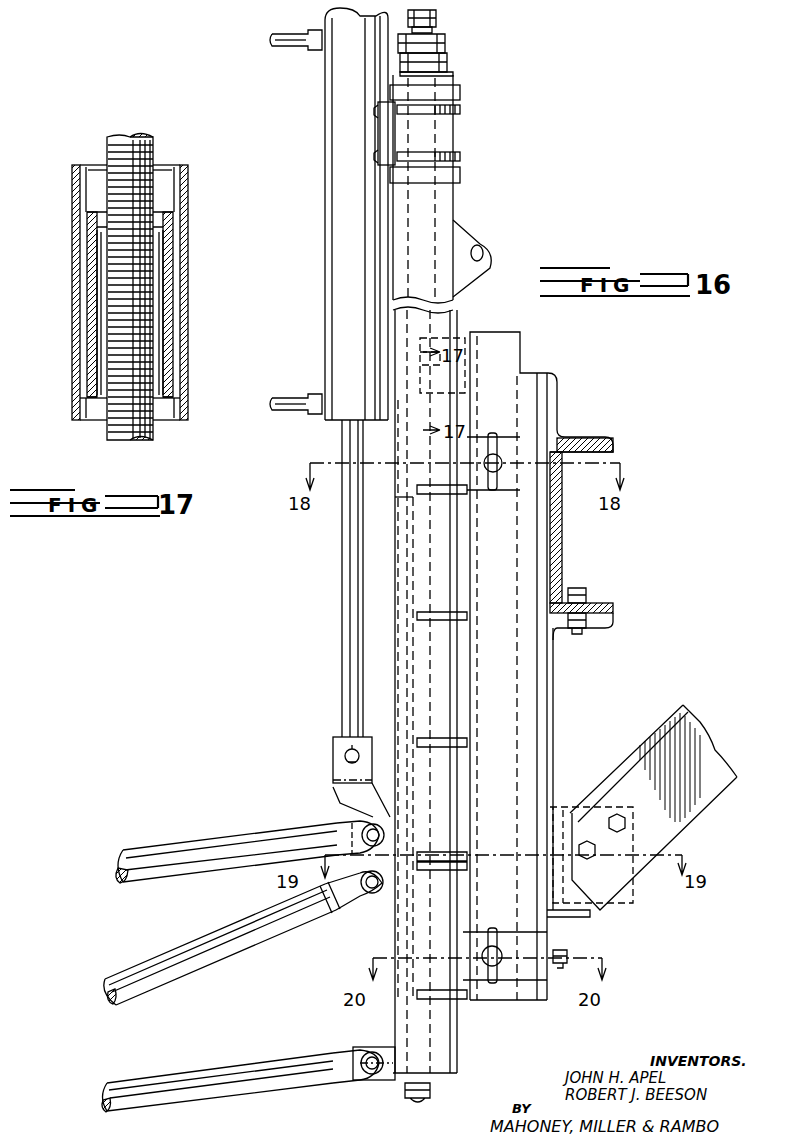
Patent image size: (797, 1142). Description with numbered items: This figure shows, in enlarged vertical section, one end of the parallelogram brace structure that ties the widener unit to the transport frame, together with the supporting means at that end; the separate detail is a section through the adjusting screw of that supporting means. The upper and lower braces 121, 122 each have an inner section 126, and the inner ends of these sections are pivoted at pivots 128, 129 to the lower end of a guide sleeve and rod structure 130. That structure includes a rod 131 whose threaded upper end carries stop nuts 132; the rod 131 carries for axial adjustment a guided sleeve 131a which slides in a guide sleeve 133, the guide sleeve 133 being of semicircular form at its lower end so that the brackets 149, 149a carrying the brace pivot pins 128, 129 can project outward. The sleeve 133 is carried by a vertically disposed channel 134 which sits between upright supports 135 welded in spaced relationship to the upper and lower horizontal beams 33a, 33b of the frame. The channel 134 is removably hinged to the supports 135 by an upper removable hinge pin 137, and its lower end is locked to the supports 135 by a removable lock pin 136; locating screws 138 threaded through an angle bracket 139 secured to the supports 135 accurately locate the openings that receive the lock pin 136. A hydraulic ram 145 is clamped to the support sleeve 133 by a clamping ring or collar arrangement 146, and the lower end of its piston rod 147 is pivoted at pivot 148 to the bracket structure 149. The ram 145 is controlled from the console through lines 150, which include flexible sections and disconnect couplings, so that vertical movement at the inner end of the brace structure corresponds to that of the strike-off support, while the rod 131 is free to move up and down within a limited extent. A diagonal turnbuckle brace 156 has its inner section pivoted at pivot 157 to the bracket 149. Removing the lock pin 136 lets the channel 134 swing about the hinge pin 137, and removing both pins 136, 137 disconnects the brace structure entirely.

In FIG. 17, the rod 131 is at (152, 155).
In FIG. 16, the rod 131 is at (440, 32).
In FIG. 17, the guided sleeve 131a is at (170, 255).
In FIG. 16, the guided sleeve 131a is at (392, 601).
In FIG. 17, the guide sleeve 133 is at (186, 262).
In FIG. 16, the guide sleeve 133 is at (456, 208).
In FIG. 16, the ram 145 is at (338, 102).
In FIG. 16, the lines 150 is at (312, 46).
In FIG. 16, the stop nuts 132 is at (448, 62).
In FIG. 16, the clamping ring or collar arrangement 146 is at (462, 108).
In FIG. 16, the guide sleeve and rod structure 130 is at (468, 142).
In FIG. 16, the channel 134 is at (522, 356).
In FIG. 16, the upright supports 135 is at (530, 737).
In FIG. 16, the upper hinge pin 137 is at (502, 455).
In FIG. 16, the upper horizontal beam 33a is at (566, 560).
In FIG. 16, the lower horizontal beam 33b is at (563, 800).
In FIG. 16, the piston rod 147 is at (345, 683).
In FIG. 16, the pivot 148 is at (344, 754).
In FIG. 16, the bracket 149 is at (334, 772).
In FIG. 16, the bracket 149a is at (376, 1082).
In FIG. 16, the pivot 128 is at (362, 828).
In FIG. 16, the pivot 129 is at (365, 1078).
In FIG. 16, the upper brace 121 is at (157, 850).
In FIG. 16, the inner section 126 is at (226, 838).
In FIG. 16, the diagonal turnbuckle brace 156 is at (258, 934).
In FIG. 16, the pivot 157 is at (372, 895).
In FIG. 16, the lower brace 122 is at (210, 1075).
In FIG. 16, the lock pin 136 is at (500, 980).
In FIG. 16, the locating screws 138 is at (567, 955).
In FIG. 16, the angle bracket 139 is at (592, 914).